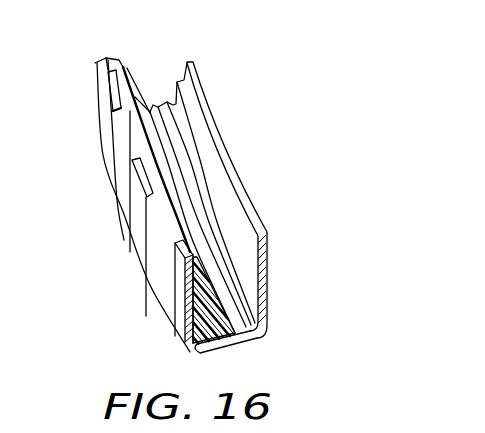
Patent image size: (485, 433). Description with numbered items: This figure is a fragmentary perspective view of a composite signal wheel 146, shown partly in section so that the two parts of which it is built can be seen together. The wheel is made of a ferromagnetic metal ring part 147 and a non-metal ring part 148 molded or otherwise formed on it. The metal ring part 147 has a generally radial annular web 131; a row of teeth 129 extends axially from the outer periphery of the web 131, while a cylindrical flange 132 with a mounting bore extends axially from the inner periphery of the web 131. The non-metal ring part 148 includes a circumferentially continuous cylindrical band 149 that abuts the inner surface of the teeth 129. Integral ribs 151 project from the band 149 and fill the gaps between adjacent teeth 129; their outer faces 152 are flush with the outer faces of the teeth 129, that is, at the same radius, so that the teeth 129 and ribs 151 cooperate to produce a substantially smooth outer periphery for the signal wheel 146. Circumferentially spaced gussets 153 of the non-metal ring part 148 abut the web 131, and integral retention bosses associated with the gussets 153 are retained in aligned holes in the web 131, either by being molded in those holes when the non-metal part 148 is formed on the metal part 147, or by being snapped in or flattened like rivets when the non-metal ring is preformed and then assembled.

The gussets 153 is at (133, 98).
The signal wheel 146 is at (228, 112).
The ferromagnetic metal ring part 147 is at (219, 133).
The cylindrical flange 132 is at (224, 186).
The cylindrical band 149 is at (143, 177).
The teeth 129 is at (137, 200).
The non-metal ring part 148 is at (162, 214).
The ribs 151 is at (175, 242).
The outer faces 152 is at (162, 280).
The web 131 is at (255, 341).